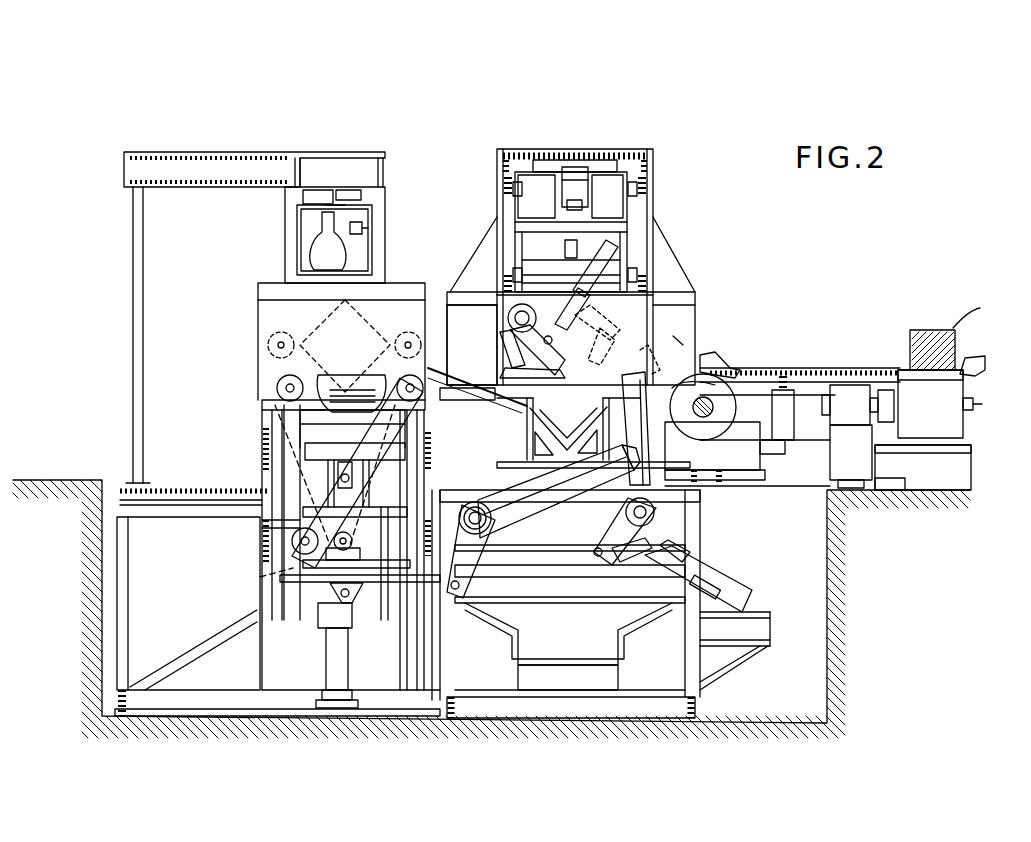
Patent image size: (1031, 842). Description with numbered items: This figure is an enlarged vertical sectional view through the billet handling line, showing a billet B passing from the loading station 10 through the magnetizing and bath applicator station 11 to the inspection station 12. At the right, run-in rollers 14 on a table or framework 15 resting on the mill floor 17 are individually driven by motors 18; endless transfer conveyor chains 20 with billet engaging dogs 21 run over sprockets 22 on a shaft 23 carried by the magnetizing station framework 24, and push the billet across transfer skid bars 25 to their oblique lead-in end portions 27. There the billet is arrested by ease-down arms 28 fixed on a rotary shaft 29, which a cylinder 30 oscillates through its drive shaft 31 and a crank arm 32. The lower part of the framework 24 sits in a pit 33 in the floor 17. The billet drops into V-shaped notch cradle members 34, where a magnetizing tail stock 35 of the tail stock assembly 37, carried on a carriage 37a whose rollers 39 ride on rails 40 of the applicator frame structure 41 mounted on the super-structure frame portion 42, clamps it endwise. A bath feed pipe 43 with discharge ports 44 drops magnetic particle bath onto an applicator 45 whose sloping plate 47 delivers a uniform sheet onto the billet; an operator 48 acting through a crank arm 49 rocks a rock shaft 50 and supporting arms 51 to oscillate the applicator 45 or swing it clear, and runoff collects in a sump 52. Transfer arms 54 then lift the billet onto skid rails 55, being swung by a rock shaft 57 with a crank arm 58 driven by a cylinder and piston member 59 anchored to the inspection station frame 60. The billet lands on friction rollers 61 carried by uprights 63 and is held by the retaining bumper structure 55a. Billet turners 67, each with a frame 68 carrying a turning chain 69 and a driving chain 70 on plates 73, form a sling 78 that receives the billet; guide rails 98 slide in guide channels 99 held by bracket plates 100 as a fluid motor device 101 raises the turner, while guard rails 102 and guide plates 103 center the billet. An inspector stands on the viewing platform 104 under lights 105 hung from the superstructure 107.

The loading station 10 is at (913, 297).
The magnetizing and bath applicator station 11 is at (718, 265).
The inspection station 12 is at (348, 144).
The run-in rollers 14 is at (950, 392).
The table or framework 15 is at (962, 452).
The mill floor 17 is at (960, 488).
The motors 18 is at (838, 450).
The endless transfer conveyor chains 20 is at (795, 372).
The billet engaging lugs or dogs 21 is at (770, 368).
The wheels or sprockets 22 is at (740, 372).
The shaft 23 is at (720, 440).
The framework 24 is at (725, 572).
The transfer skid bars 25 is at (850, 390).
The lead-in end portions 27 is at (660, 385).
The ease-down arms 28 is at (632, 452).
The rotary shaft 29 is at (700, 525).
The hydraulic or pneumatic cylinder 30 is at (675, 596).
The drive shaft 31 is at (625, 562).
The crank arm 32 is at (660, 545).
The pit 33 is at (838, 640).
The notch cradle members 34 is at (600, 455).
The magnetizing tail stock 35 is at (488, 398).
The tail stock assembly 37 is at (592, 378).
The carriage 37a is at (512, 335).
The rollers 39 is at (505, 255).
The rails 40 is at (505, 186).
The magnetic particle bath applicator frame structure 41 is at (640, 165).
The super-structure frame portion 42 is at (690, 305).
The bath feed pipe 43 is at (508, 318).
The discharge ports 44 is at (448, 340).
The applicator 45 is at (500, 372).
The flow distribution surface panel or plate 47 is at (597, 335).
The cylinder and piston type operator 48 is at (565, 266).
The crank arm 49 is at (570, 310).
The rock shaft 50 is at (585, 268).
The supporting arms 51 is at (505, 352).
The sump 52 is at (552, 668).
The transfer arms 54 is at (522, 556).
The skid rails 55 is at (477, 390).
The retaining bumper structure 55a is at (345, 346).
The rock shaft 57 is at (492, 518).
The crank arm 58 is at (465, 586).
The cylinder and piston member 59 is at (362, 615).
The frame 60 is at (240, 690).
The friction rollers 61 is at (384, 376).
The uprights 63 is at (255, 600).
The billet turners 67 is at (270, 402).
The frame 68 is at (292, 570).
The billet supporting and turning sprocket chain 69 is at (262, 497).
The driving sprocket chain 70 is at (355, 480).
The plates 73 is at (466, 400).
The catenary or sling 78 is at (392, 306).
The guide rails 98 is at (255, 612).
The guide channels 99 is at (265, 478).
The bracket plates 100 is at (262, 440).
The fluid motor device 101 is at (335, 665).
The guard rails 102 is at (384, 398).
The guide plates 103 is at (262, 406).
The viewing platform 104 is at (168, 490).
The lights 105 is at (318, 245).
The superstructure 107 is at (385, 183).
The billet B is at (641, 370).